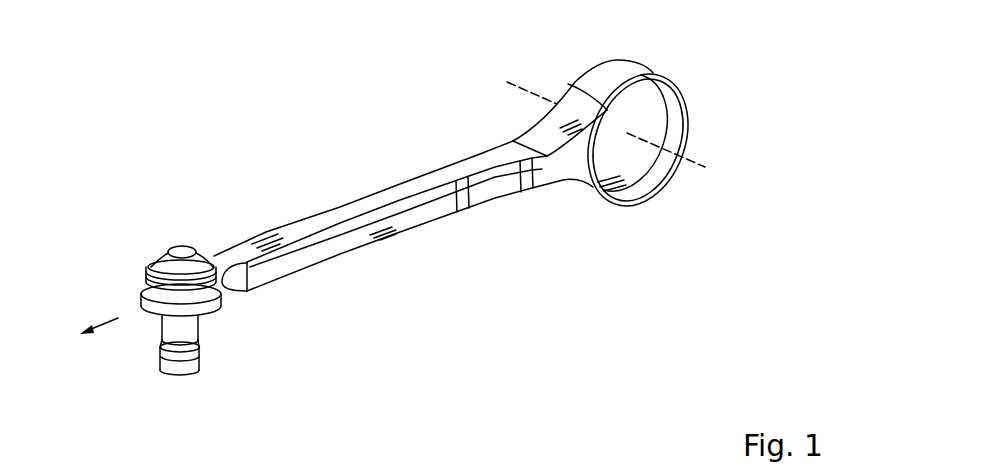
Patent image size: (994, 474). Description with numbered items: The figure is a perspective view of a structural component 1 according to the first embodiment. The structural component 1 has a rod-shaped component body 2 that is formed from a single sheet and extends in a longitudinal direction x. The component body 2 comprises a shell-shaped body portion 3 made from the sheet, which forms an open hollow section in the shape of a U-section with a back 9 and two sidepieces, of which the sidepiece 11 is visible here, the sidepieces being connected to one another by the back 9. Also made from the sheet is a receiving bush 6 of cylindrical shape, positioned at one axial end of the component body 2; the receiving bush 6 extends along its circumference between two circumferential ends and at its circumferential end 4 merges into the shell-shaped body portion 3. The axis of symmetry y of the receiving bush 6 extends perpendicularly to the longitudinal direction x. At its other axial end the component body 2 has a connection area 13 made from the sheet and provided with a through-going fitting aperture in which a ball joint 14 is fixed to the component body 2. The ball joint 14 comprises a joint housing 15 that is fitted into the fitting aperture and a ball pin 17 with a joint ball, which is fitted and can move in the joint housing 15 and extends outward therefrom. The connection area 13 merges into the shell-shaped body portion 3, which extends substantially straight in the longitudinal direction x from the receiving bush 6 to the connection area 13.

The structural component 1 is at (370, 96).
The component body 2 is at (444, 162).
The shell-shaped body portion 3 is at (303, 230).
The circumferential end 4 is at (568, 82).
The receiving bush 6 is at (660, 187).
The back 9 is at (385, 202).
The sidepiece 11 is at (330, 247).
The connection area 13 is at (134, 262).
The ball joint 14 is at (150, 330).
The joint housing 15 is at (164, 263).
The ball pin 17 is at (198, 363).
The longitudinal direction x is at (103, 327).
The axis of symmetry y is at (700, 162).